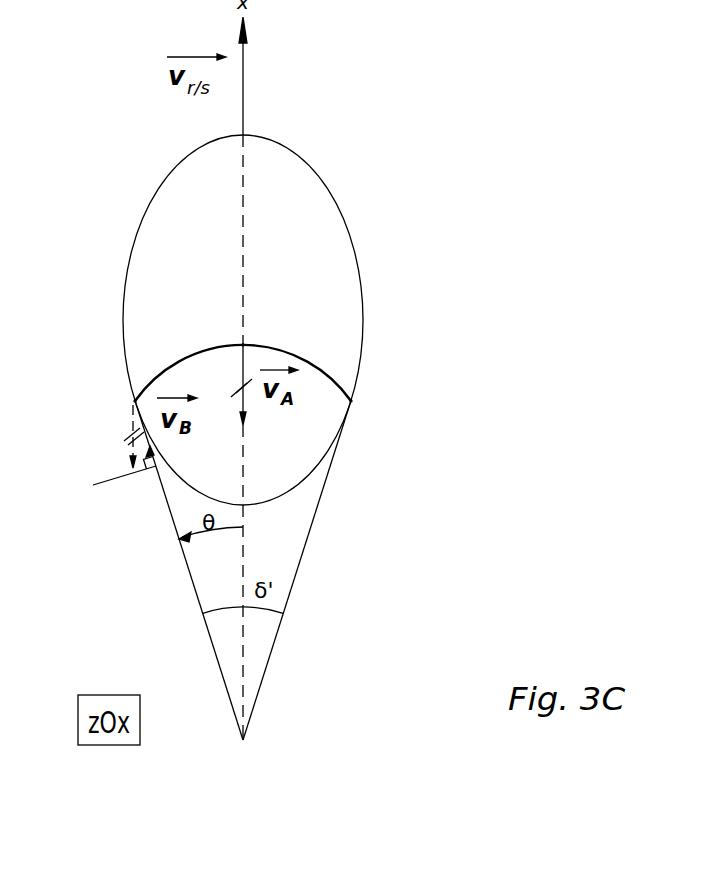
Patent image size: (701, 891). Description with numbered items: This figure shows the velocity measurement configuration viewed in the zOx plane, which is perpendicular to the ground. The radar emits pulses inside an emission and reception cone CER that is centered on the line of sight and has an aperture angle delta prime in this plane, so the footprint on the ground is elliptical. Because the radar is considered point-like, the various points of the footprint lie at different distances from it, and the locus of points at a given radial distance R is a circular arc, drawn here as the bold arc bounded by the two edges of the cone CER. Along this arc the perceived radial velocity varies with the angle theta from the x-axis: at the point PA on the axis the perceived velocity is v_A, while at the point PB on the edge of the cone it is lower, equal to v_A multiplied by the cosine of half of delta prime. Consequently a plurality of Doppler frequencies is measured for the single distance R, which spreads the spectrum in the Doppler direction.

The emission and reception cone CER is at (168, 508).
The point P_A PA is at (225, 329).
The point P_B PB is at (112, 387).
The radial distance R is at (364, 387).